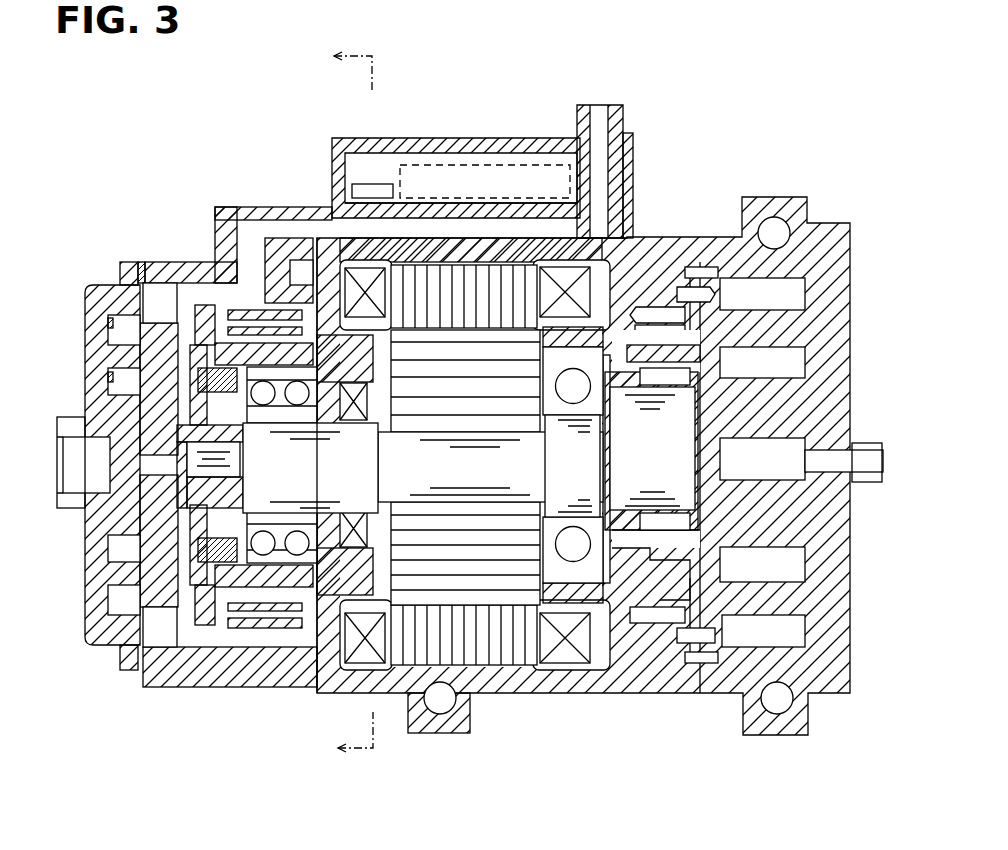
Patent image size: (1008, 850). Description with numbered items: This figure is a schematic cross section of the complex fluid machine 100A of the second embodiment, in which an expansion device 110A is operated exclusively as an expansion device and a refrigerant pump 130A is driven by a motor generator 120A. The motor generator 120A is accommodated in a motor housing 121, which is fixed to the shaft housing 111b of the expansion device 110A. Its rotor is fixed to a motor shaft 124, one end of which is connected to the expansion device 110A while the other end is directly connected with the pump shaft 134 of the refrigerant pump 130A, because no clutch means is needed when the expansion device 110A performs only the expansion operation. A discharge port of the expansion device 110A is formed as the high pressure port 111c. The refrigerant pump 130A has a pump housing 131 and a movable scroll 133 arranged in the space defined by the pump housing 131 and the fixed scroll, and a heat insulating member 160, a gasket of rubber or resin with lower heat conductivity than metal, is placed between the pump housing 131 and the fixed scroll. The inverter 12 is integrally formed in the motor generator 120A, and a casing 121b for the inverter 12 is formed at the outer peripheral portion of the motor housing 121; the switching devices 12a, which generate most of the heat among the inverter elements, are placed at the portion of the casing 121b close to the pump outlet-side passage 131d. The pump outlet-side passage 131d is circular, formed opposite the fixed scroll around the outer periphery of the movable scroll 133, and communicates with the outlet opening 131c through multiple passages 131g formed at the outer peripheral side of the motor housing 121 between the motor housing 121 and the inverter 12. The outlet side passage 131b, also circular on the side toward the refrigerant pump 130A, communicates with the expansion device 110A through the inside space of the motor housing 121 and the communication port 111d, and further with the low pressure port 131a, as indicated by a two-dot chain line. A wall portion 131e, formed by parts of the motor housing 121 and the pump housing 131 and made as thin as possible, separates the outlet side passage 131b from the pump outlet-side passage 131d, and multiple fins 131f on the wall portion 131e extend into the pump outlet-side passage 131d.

The complex fluid machine 100A is at (165, 148).
The refrigerant pump 130A is at (122, 245).
The heat insulating member (gasket) 160 is at (120, 268).
The pump outlet-side passage 131d is at (160, 300).
The pump housing 131 is at (205, 265).
The fins 131f is at (258, 312).
The wall portion 131e is at (313, 305).
The outlet side passage 131b is at (330, 328).
The casing 121b is at (356, 145).
The switching devices 12a is at (378, 183).
The motor housing 121 is at (453, 245).
The inverter 12 is at (485, 165).
The passages 131g is at (520, 222).
The outlet opening 131c is at (600, 112).
The expansion device 110A is at (708, 205).
The shaft housing 111b is at (655, 250).
The high pressure port 111c is at (862, 458).
The communication port 111d is at (633, 645).
The movable scroll 133 is at (160, 363).
The motor generator 120A is at (318, 703).
The low pressure port 131a is at (347, 700).
The pump shaft 134 is at (370, 610).
The motor shaft 124 is at (445, 488).